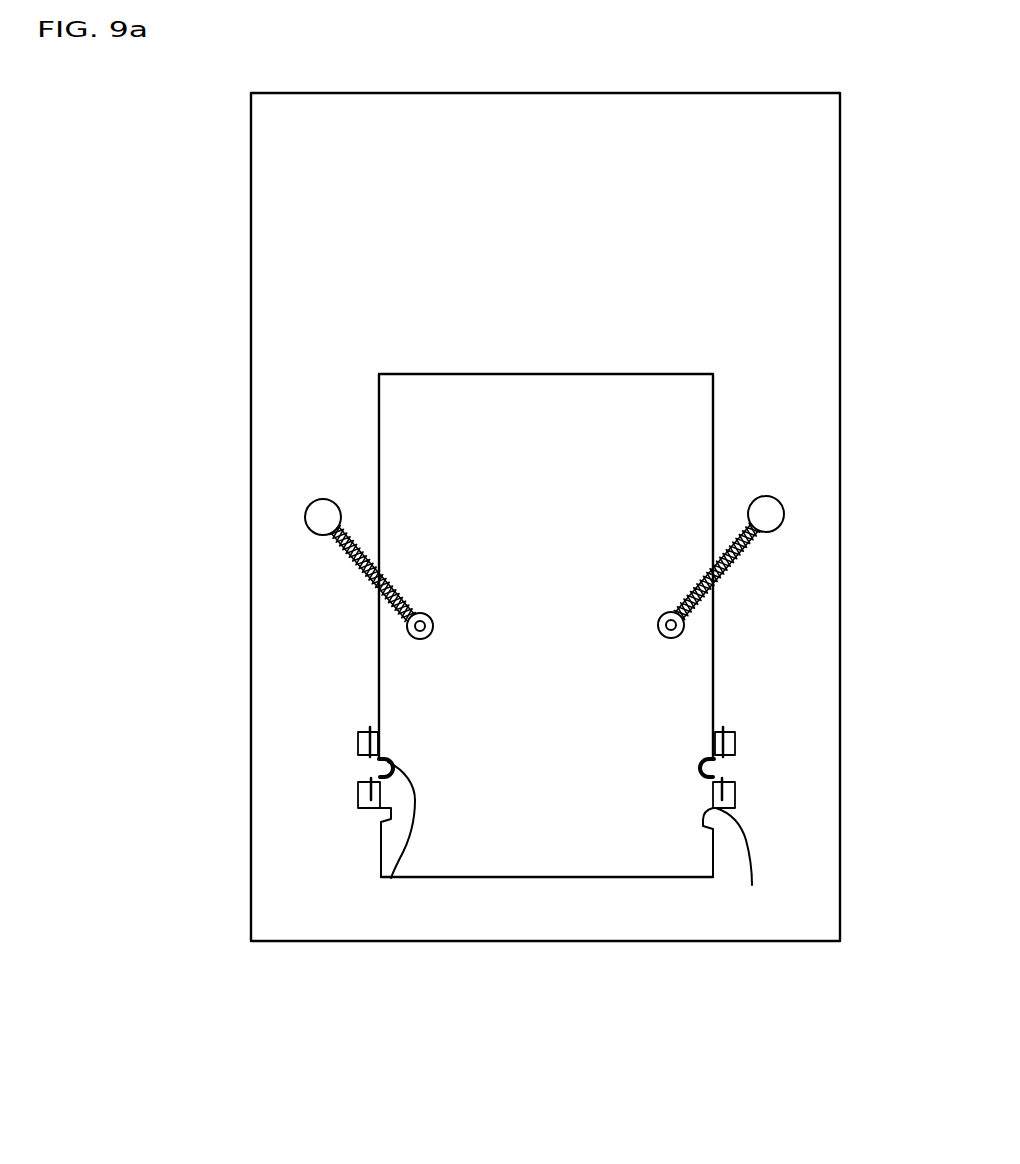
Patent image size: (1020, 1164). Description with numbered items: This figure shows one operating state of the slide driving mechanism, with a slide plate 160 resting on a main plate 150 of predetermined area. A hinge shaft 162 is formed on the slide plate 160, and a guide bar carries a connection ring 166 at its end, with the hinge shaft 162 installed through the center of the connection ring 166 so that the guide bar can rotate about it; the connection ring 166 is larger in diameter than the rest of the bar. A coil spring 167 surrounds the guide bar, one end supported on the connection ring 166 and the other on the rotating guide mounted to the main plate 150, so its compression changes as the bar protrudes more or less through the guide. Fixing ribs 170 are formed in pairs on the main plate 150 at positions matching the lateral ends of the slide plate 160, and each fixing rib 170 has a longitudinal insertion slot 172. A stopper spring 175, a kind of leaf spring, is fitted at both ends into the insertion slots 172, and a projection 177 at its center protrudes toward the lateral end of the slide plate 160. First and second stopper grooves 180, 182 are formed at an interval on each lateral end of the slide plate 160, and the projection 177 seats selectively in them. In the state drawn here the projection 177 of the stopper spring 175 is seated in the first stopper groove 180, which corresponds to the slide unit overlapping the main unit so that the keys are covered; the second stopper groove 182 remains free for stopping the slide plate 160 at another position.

The main plate 150 is at (652, 887).
The slide plate 160 is at (482, 858).
The hinge shaft 162 is at (694, 626).
The connection ring 166 is at (692, 640).
The coil spring 167 is at (355, 572).
The fixing rib 170 is at (735, 800).
The insertion slot 172 is at (735, 788).
The stopper spring 175 is at (720, 767).
The projection 177 is at (391, 878).
The first stopper groove 180 is at (377, 770).
The second stopper groove 182 is at (380, 823).